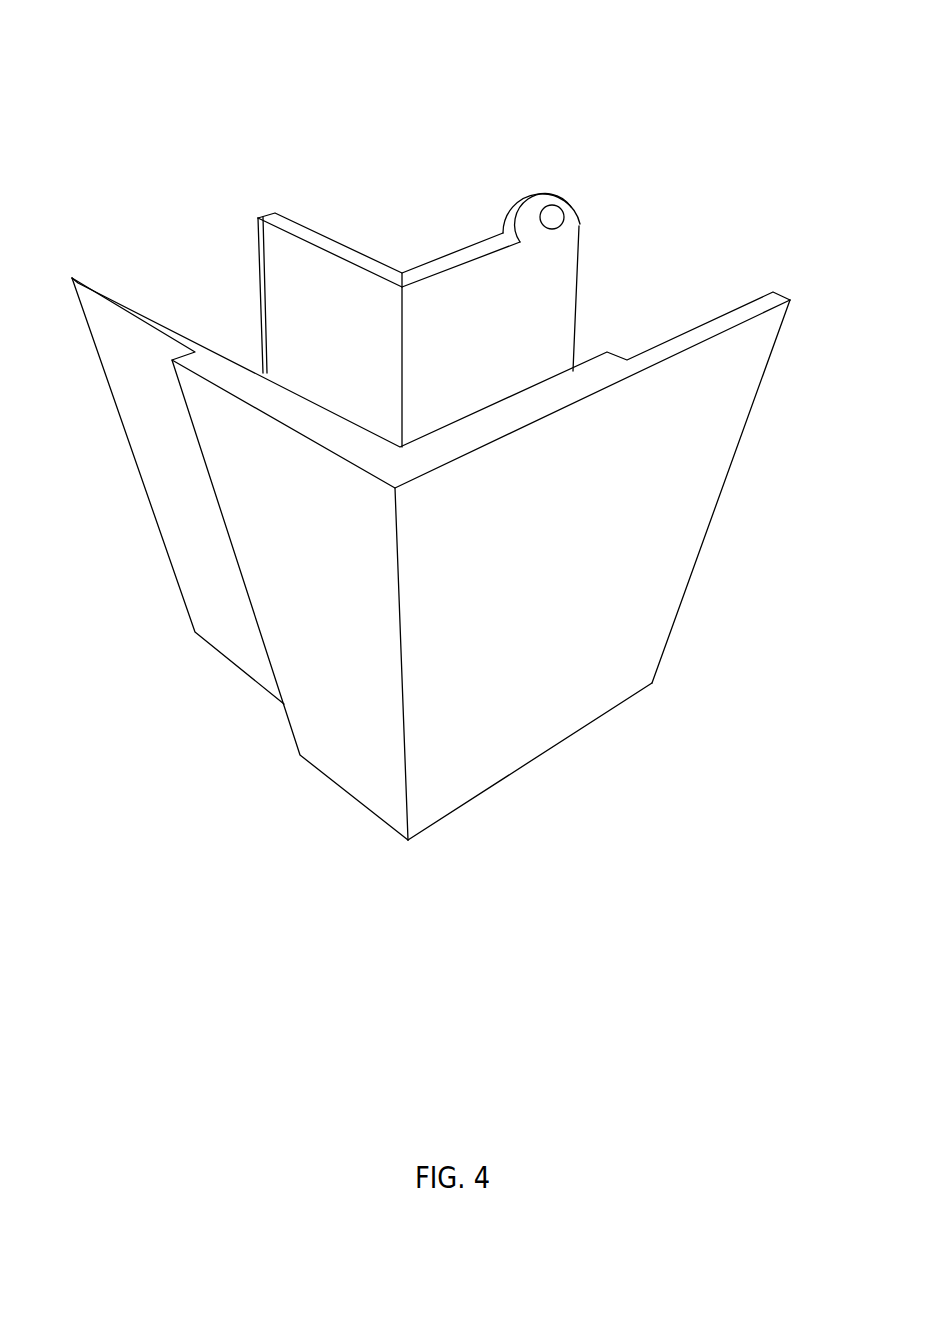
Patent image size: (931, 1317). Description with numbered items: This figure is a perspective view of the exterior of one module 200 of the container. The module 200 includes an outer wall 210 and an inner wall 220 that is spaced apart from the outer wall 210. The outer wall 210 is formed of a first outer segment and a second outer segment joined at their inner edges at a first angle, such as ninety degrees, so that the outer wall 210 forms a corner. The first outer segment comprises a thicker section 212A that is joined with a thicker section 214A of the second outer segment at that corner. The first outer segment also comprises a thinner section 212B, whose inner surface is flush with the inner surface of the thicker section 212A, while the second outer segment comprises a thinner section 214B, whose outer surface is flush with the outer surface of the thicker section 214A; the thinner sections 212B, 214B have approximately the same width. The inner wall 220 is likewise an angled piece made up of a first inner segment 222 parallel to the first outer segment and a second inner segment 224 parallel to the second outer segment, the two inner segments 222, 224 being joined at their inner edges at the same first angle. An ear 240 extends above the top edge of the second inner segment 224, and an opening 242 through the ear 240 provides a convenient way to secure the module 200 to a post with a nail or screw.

The module 200 is at (223, 116).
The outer wall 210 is at (360, 758).
The thicker section of first outer segment 212A is at (307, 633).
The thinner section of first outer segment 212B is at (183, 503).
The thicker section of second outer segment 214A is at (583, 380).
The thinner section of second outer segment 214B is at (745, 317).
The inner wall 220 is at (293, 302).
The first inner segment 222 is at (307, 248).
The second inner segment 224 is at (451, 273).
The ear 240 is at (552, 197).
The opening 242 is at (570, 213).